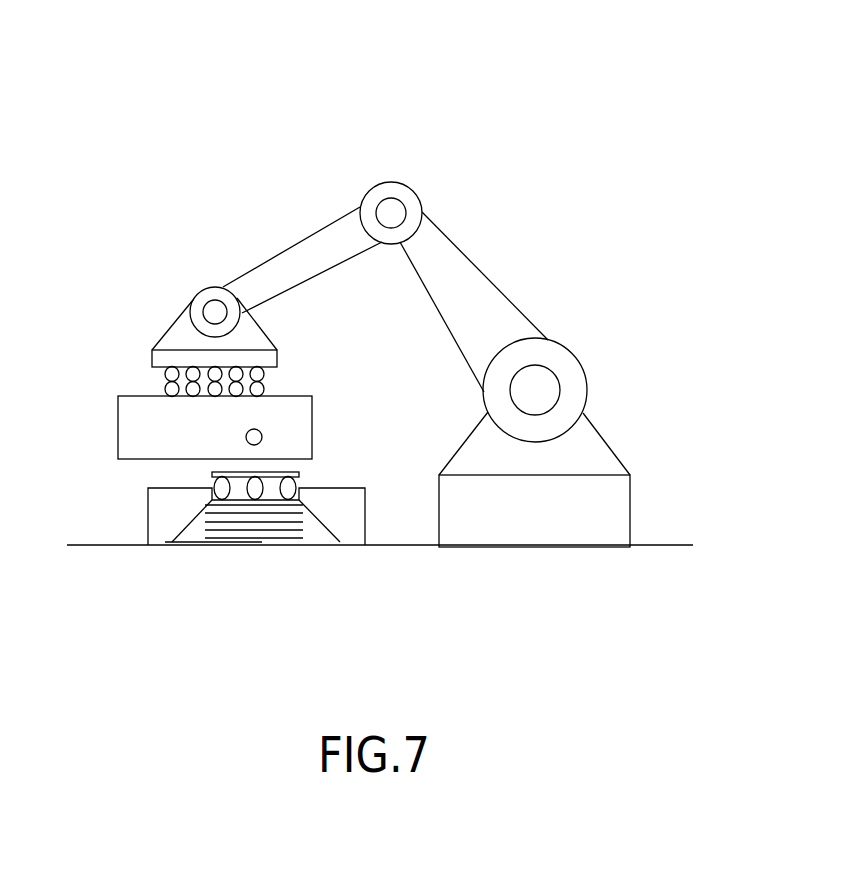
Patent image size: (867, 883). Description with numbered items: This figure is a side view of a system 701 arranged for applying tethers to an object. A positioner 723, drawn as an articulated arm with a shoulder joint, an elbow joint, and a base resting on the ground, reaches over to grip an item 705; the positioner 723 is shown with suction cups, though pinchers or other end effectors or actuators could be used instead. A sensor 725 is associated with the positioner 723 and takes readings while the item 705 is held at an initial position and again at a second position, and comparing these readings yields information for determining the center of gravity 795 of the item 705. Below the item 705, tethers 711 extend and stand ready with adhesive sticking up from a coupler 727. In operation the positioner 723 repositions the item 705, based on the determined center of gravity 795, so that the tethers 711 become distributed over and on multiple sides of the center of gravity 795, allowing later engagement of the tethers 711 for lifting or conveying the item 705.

The system 701 is at (631, 89).
The positioner 723 is at (592, 256).
The sensor 725 is at (205, 313).
The item 705 is at (118, 430).
The center of gravity 795 is at (260, 430).
The tethers 711 is at (296, 477).
The coupler 727 is at (148, 520).